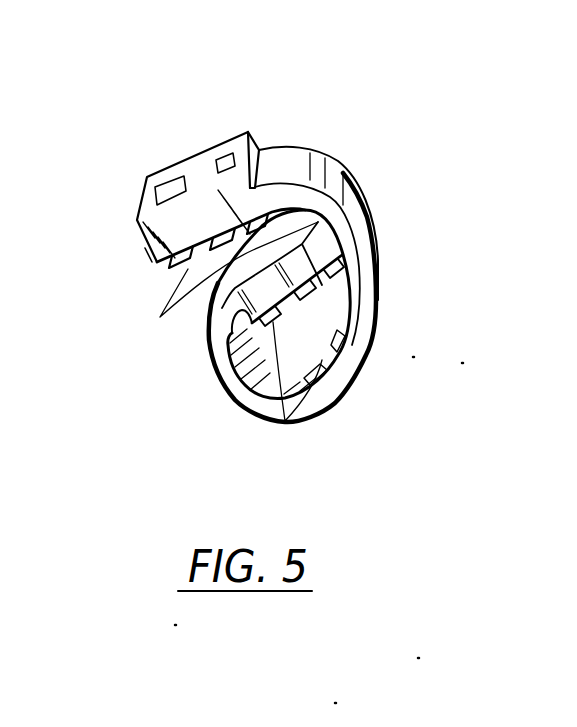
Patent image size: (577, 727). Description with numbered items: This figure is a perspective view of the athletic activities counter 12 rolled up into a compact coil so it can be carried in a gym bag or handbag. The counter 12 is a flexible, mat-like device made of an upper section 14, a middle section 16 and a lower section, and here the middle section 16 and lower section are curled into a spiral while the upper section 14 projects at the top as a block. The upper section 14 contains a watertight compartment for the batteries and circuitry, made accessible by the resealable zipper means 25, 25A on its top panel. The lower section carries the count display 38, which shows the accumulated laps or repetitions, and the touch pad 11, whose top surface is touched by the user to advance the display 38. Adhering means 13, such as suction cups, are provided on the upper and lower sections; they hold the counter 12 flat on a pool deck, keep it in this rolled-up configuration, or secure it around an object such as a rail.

The touch pad 11 is at (231, 155).
The athletic activities counter 12 is at (323, 144).
The adhering means 13 is at (284, 445).
The upper section 14 is at (283, 277).
The middle section 16 is at (367, 216).
The zipper means 25 is at (147, 243).
The zipper means 25A is at (148, 255).
The count display 38 is at (181, 177).